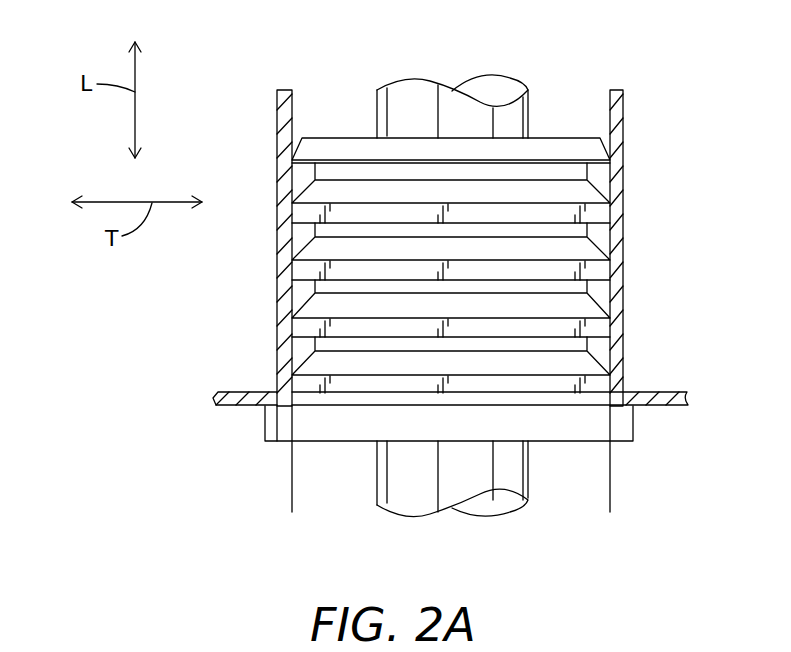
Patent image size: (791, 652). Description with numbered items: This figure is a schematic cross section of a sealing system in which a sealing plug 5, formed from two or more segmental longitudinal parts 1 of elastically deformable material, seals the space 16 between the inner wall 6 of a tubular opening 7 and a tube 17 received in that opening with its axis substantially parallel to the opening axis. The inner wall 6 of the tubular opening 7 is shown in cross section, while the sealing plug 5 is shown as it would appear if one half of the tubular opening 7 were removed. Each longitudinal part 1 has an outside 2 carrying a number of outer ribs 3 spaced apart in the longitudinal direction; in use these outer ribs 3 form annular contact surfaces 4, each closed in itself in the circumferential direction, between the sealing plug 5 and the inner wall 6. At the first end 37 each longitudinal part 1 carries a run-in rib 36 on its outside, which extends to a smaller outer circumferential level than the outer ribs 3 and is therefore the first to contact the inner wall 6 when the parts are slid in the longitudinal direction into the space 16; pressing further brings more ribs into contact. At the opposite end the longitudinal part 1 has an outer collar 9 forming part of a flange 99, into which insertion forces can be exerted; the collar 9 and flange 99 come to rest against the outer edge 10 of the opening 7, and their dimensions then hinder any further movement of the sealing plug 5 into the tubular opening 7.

The longitudinal part 1 is at (600, 291).
The outside 2 is at (315, 232).
The outer ribs 3 is at (612, 190).
The annular contact surfaces 4 is at (598, 218).
The sealing plug 5 is at (612, 250).
The inner wall 6 is at (294, 101).
The tubular opening 7 is at (292, 520).
The outer collar 9 is at (277, 441).
The outer edge 10 is at (262, 406).
The space 16 is at (376, 84).
The tube 17 is at (490, 77).
The run-in rib 36 is at (612, 150).
The first end 37 is at (582, 138).
The flange 99 is at (635, 433).